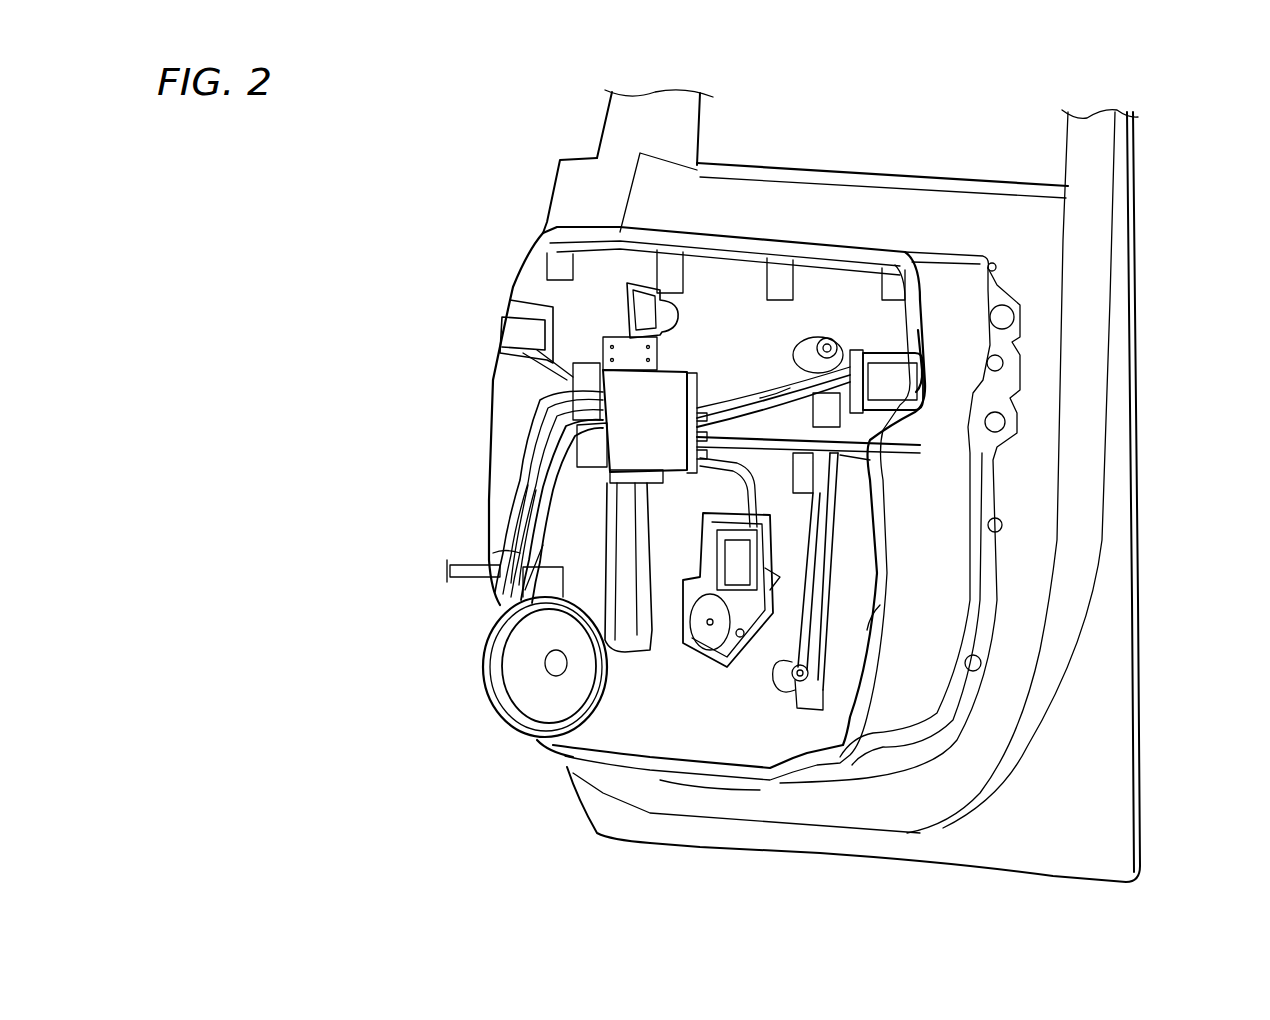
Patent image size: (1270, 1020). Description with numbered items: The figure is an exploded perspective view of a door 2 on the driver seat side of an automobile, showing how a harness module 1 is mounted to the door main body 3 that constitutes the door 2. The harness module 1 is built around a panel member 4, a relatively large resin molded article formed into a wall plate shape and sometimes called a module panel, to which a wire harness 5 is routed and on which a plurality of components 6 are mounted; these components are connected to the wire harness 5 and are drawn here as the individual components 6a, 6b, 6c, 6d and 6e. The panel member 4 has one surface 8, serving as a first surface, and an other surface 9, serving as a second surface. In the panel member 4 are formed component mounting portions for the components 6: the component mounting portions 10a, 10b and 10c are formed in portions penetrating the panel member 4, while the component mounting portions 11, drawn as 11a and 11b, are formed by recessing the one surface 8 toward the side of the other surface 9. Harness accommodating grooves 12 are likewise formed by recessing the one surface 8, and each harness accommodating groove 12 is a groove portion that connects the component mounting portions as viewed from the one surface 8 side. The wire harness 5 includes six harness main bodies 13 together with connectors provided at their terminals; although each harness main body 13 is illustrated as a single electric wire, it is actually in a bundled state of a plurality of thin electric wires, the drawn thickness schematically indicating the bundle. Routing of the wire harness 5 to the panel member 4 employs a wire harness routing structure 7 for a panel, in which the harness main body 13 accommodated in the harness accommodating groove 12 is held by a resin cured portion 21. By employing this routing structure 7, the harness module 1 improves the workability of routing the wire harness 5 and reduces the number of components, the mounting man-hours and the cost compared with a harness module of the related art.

The harness module 1 is at (520, 255).
The door 2 is at (470, 135).
The door main body 3 is at (600, 130).
The panel member 4 is at (672, 740).
The wire harness 5 is at (467, 562).
The components 6 is at (460, 340).
The component 6a is at (515, 333).
The component 6b is at (522, 677).
The component 6c is at (640, 383).
The component 6d is at (713, 640).
The component 6e is at (923, 385).
The wire harness routing structure for a panel 7 is at (533, 423).
The one surface 8 is at (853, 633).
The other surface 9 is at (880, 605).
The component mounting portion 10a is at (510, 293).
The component mounting portion 10b is at (553, 745).
The component mounting portion 10c is at (913, 373).
The component mounting portion 11 is at (758, 236).
The component mounting portion 11a is at (690, 380).
The component mounting portion 11b is at (780, 577).
The harness accommodating groove 12 is at (530, 467).
The harness main body 13 is at (578, 467).
The resin cured portion 21 is at (523, 487).